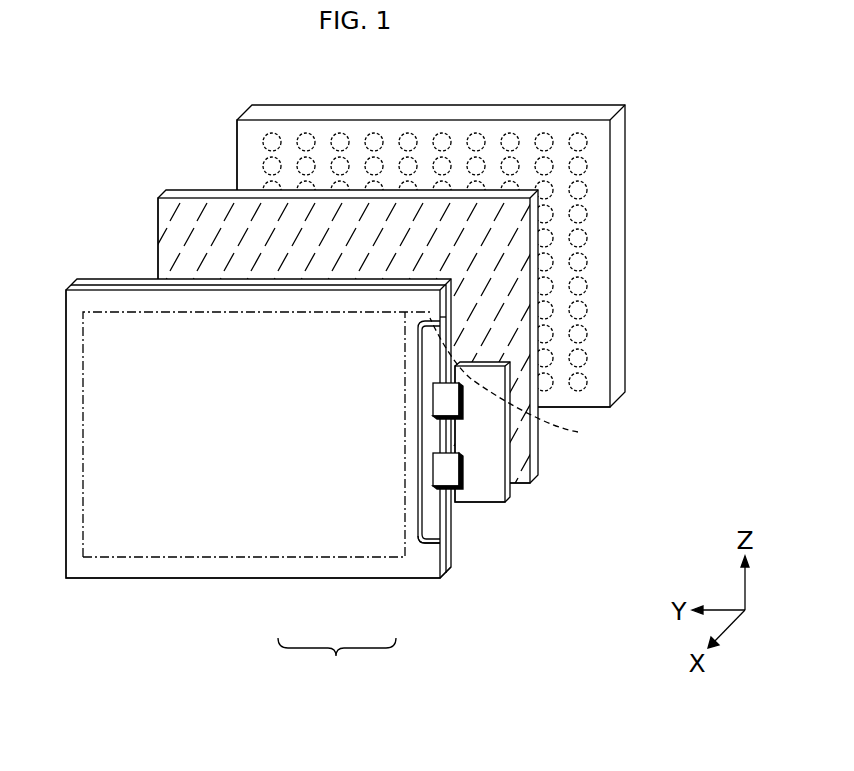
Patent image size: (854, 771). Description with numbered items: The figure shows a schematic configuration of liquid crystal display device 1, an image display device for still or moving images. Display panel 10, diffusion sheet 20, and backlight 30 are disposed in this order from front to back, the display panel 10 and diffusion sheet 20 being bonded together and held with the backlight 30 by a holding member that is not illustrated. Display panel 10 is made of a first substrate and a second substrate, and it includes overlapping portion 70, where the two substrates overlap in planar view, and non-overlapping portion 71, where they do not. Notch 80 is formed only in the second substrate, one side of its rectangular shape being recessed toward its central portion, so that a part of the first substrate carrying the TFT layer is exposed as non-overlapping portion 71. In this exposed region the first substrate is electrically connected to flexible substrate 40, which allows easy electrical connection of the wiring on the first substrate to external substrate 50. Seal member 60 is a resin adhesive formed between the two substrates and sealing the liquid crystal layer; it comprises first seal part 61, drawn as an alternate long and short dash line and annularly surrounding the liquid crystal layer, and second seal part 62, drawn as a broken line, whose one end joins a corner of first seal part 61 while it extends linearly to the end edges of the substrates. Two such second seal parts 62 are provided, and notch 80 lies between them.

The liquid crystal display device 1 is at (641, 88).
The display panel 10 is at (90, 277).
The diffusion sheet 20 is at (165, 218).
The backlight 30 is at (250, 133).
The flexible substrate 40 is at (450, 403).
The external substrate 50 is at (498, 450).
The seal member 60 is at (334, 484).
The first seal part 61 is at (307, 558).
The second seal part 62 is at (372, 606).
The overlapping portion 70 is at (183, 545).
The non-overlapping portion 71 is at (433, 528).
The notch 80 is at (422, 492).